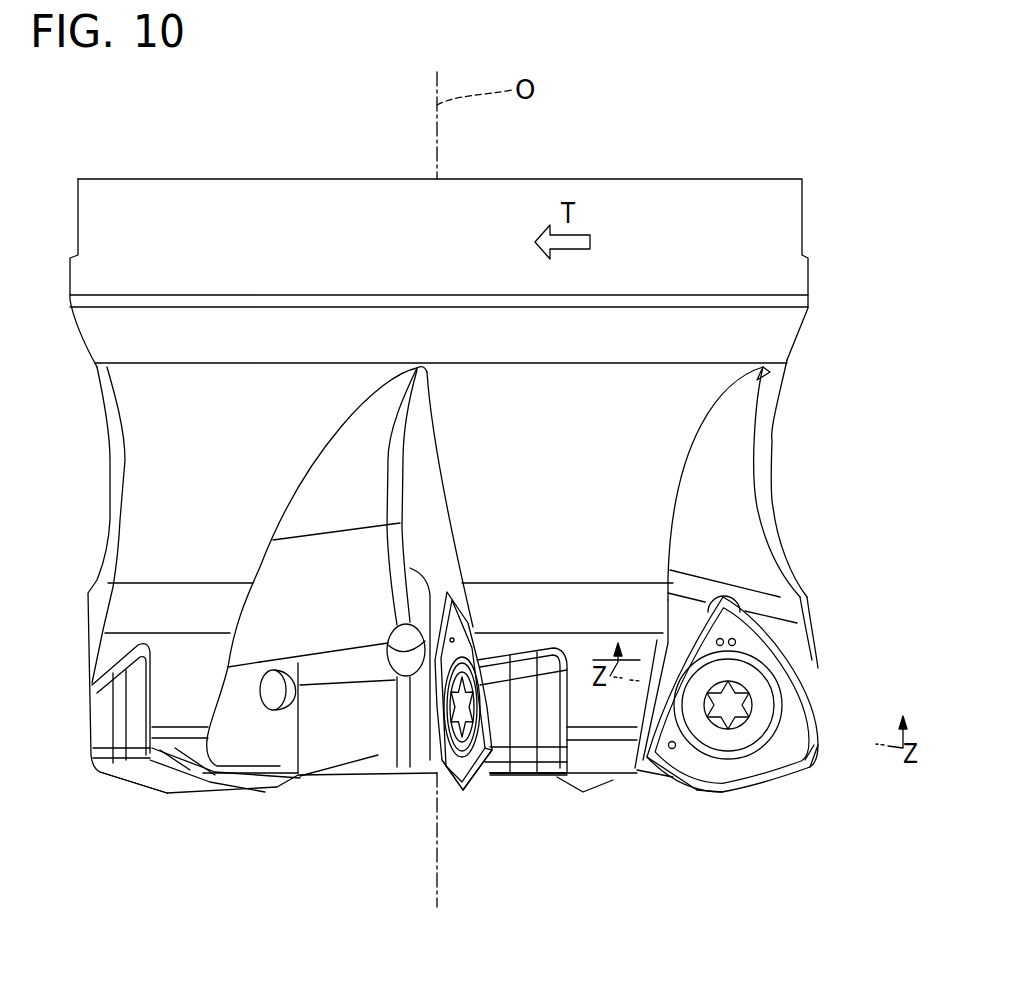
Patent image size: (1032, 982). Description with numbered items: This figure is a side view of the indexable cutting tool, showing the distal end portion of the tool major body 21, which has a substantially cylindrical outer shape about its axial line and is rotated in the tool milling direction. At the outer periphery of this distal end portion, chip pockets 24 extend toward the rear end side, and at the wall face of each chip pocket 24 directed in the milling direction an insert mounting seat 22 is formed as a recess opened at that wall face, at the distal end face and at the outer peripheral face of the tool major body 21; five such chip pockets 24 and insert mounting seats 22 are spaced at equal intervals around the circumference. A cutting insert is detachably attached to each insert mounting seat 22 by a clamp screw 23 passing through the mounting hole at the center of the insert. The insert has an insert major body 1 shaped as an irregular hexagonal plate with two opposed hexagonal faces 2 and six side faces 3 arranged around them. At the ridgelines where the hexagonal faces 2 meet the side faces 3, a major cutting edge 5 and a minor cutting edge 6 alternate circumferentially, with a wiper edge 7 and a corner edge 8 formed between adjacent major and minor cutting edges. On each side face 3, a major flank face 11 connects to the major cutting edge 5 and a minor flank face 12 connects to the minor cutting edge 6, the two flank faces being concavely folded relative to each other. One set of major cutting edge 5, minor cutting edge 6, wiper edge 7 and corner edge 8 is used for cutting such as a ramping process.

The insert major body 1 is at (128, 790).
The hexagonal face 2 is at (450, 754).
The side face 3 is at (559, 896).
The major cutting edge 5 is at (480, 792).
The minor cutting edge 6 is at (450, 787).
The wiper edge 7 is at (462, 792).
The corner edge 8 is at (507, 760).
The major flank face 11 is at (497, 778).
The minor flank face 12 is at (540, 778).
The tool major body 21 is at (835, 175).
The insert mounting seat 22 is at (165, 668).
The clamp screw 23 is at (458, 697).
The chip pocket 24 is at (328, 500).